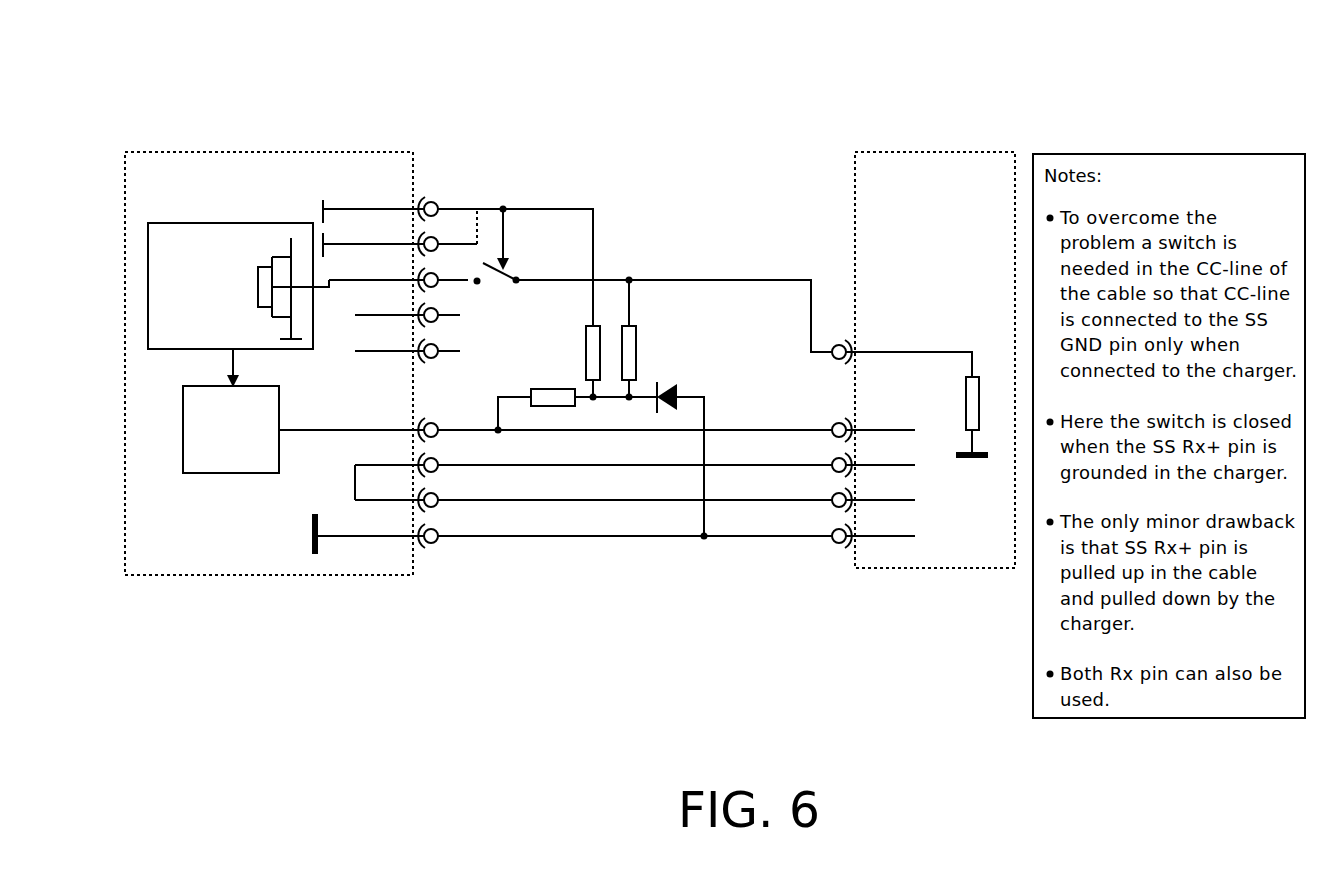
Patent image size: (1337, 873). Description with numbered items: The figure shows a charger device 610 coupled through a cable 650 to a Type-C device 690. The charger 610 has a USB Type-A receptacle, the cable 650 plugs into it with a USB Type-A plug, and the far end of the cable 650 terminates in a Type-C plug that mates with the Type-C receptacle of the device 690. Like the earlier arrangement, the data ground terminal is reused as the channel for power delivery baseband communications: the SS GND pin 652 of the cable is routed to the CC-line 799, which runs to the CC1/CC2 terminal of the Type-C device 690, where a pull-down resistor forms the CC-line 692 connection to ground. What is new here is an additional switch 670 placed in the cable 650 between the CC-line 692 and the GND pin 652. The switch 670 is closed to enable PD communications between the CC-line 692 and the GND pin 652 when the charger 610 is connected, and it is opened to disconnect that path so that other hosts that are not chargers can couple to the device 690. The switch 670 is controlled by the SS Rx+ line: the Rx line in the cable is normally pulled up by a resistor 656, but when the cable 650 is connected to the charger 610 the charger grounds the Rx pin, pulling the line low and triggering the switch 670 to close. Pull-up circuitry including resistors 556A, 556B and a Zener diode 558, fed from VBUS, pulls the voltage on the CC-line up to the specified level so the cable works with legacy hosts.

The charger device 610 is at (290, 183).
The cable 650 is at (853, 152).
The Type-C device 690 is at (953, 286).
The switch 670 is at (510, 272).
The GND pin 652 is at (468, 286).
The resistor 656 is at (590, 360).
The resistor 556A is at (627, 337).
The resistor 556B is at (547, 393).
The Zener diode 558 is at (680, 396).
The CC-line 799 is at (812, 290).
The CC-line 692 is at (975, 360).